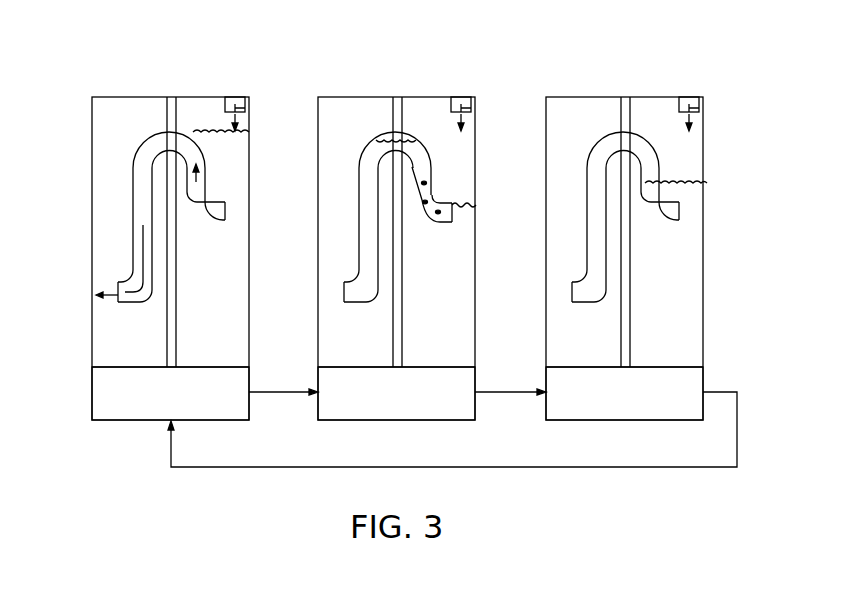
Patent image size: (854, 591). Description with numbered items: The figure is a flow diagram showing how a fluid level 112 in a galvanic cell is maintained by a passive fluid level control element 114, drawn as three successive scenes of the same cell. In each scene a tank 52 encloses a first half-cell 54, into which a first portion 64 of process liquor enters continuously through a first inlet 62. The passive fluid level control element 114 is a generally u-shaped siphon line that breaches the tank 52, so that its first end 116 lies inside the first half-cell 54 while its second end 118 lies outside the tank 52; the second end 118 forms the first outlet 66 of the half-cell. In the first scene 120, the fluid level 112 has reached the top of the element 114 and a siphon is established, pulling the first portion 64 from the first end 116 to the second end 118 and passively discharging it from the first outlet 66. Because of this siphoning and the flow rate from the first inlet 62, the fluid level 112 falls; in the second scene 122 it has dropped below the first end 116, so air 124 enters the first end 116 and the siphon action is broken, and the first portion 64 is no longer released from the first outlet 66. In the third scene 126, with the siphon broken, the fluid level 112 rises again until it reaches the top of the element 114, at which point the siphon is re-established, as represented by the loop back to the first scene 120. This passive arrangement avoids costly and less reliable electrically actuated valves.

The tank 52 is at (167, 97).
The first half-cell 54 is at (203, 104).
The first inlet 62 is at (237, 97).
The first portion of process liquor 64 is at (247, 104).
The first outlet 66 is at (118, 282).
The fluid level 112 is at (226, 138).
The passive fluid level control element 114 is at (134, 165).
The first end 116 is at (207, 221).
The second end 118 is at (126, 302).
The first scene 120 is at (203, 420).
The second scene 122 is at (398, 421).
The air 124 is at (432, 183).
The third scene 126 is at (623, 420).